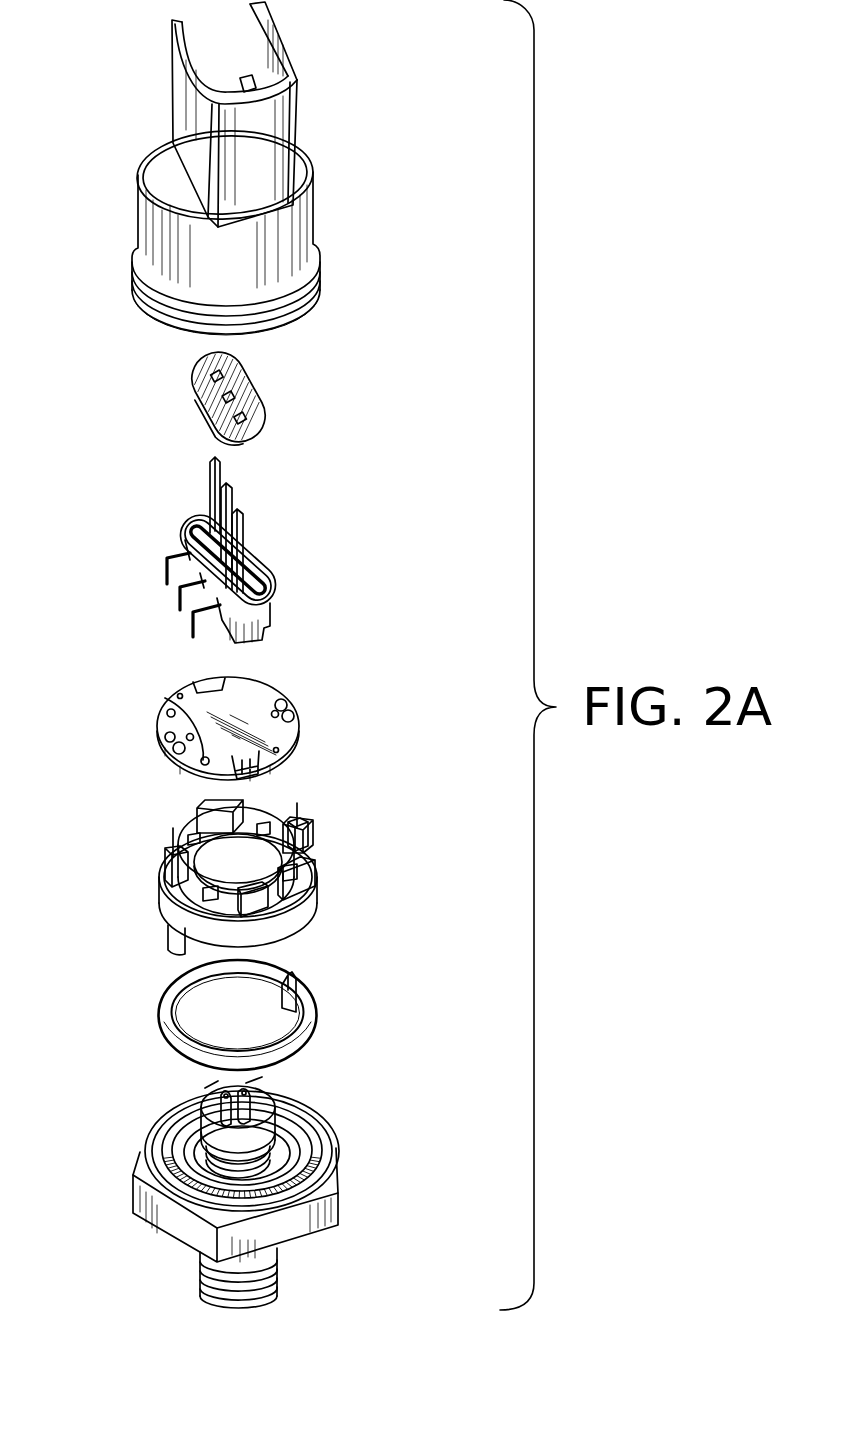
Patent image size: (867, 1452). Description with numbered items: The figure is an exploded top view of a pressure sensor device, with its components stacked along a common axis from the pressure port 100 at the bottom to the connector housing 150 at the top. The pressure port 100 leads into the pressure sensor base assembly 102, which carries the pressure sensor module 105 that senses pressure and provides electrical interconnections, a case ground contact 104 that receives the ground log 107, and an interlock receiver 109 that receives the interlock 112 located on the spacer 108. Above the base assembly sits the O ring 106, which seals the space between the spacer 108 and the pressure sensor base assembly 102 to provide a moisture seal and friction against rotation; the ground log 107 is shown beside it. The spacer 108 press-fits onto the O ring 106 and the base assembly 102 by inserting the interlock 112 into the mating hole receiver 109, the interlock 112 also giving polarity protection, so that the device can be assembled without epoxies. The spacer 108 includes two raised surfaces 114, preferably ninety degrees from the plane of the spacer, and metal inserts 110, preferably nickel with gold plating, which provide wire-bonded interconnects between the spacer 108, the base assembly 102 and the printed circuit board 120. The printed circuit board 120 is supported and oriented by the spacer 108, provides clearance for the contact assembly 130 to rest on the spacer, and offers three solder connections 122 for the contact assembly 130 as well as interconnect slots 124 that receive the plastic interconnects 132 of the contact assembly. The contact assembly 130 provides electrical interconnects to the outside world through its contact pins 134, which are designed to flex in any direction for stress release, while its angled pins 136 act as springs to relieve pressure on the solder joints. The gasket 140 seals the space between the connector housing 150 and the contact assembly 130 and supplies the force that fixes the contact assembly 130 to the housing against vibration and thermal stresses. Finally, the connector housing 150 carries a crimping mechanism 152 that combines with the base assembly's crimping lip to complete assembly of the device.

The pressure port 100 is at (200, 1273).
The pressure sensor base assembly 102 is at (218, 1169).
The case ground contact 104 is at (253, 1119).
The pressure sensor module 105 is at (318, 1143).
The O ring 106 is at (225, 1015).
The ground log 107 is at (302, 990).
The spacer 108 is at (222, 871).
The interlock receiver 109 is at (190, 1120).
The metal inserts 110 is at (173, 843).
The interlock 112 is at (160, 905).
The raised surfaces 114 is at (212, 802).
The printed circuit board 120 is at (212, 724).
The solder connections 122 is at (172, 710).
The interconnect slots 124 is at (210, 683).
The contact assembly 130 is at (221, 565).
The plastic interconnects 132 is at (255, 640).
The contact pins 134 is at (210, 493).
The angled pins 136 is at (187, 632).
The gasket 140 is at (192, 372).
The connector housing 150 is at (138, 212).
The crimping mechanism 152 is at (315, 283).